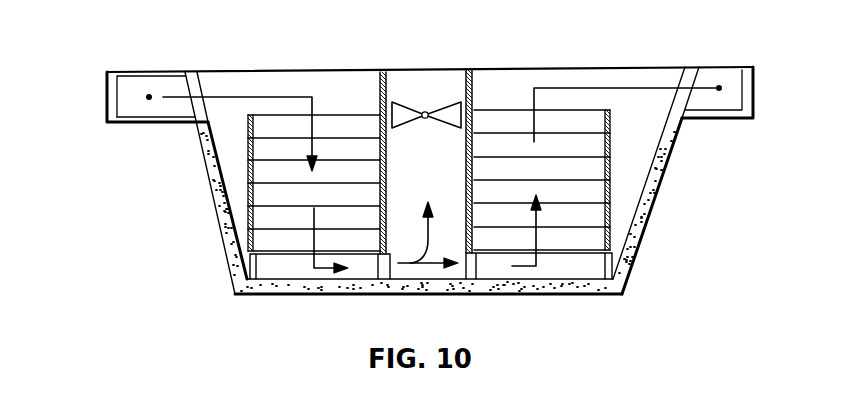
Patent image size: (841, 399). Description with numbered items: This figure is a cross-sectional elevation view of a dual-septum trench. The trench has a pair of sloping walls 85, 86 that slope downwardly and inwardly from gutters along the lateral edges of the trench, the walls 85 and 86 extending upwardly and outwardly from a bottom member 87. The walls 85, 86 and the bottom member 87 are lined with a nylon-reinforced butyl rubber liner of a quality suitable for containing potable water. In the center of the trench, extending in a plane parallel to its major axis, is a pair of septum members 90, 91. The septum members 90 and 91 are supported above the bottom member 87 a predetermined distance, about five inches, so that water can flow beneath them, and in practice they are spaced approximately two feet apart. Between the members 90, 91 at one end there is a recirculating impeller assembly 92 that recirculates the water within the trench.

The sloping wall 85 is at (218, 184).
The sloping wall 86 is at (650, 168).
The bottom member 87 is at (488, 279).
The septum member 90 is at (472, 90).
The septum member 91 is at (380, 80).
The recirculating impeller assembly 92 is at (428, 112).